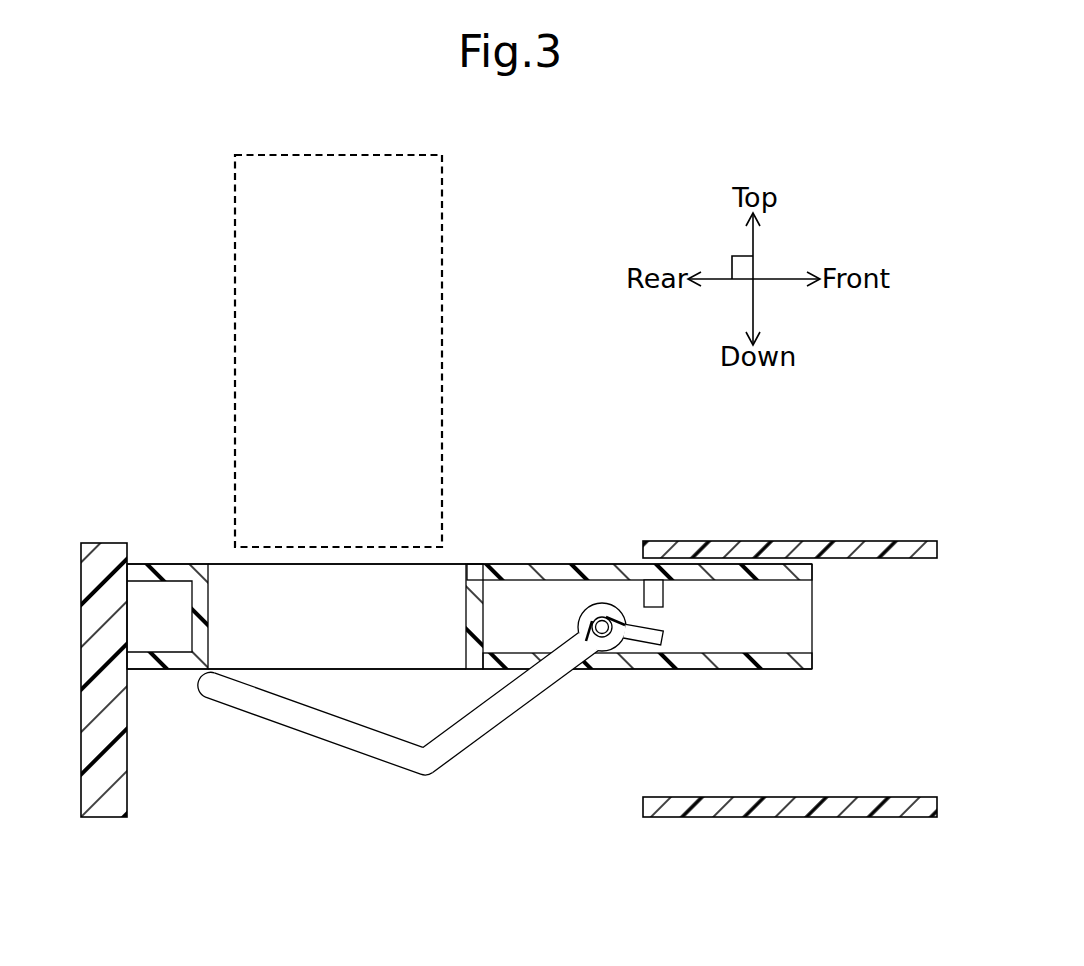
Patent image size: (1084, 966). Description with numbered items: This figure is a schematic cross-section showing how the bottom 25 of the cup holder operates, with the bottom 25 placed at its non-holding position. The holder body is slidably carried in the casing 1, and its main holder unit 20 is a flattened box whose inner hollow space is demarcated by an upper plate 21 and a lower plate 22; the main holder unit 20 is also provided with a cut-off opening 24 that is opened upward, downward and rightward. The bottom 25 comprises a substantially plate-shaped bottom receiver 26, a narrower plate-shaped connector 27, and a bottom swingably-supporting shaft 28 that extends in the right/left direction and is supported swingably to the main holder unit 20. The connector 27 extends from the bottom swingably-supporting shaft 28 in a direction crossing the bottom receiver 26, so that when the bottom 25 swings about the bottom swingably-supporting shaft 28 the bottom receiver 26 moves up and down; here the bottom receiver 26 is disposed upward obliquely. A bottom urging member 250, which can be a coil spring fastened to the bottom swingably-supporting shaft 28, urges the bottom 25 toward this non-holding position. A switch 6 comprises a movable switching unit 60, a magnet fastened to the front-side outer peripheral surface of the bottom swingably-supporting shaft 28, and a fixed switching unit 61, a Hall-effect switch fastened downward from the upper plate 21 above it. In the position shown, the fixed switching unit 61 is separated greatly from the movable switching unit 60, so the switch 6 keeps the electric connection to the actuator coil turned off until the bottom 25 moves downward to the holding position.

The casing 1 is at (765, 540).
The switch 6 is at (754, 567).
The main holder unit 20 is at (495, 595).
The upper plate 21 is at (555, 564).
The lower plate 22 is at (670, 663).
The cut-off opening 24 is at (448, 623).
The bottom 25 is at (465, 676).
The bottom receiver 26 is at (283, 722).
The connector 27 is at (500, 715).
The bottom swingably-supporting shaft 28 is at (608, 603).
The movable switching unit 60 is at (657, 627).
The fixed switching unit 61 is at (661, 596).
The bottom urging member 250 is at (608, 640).